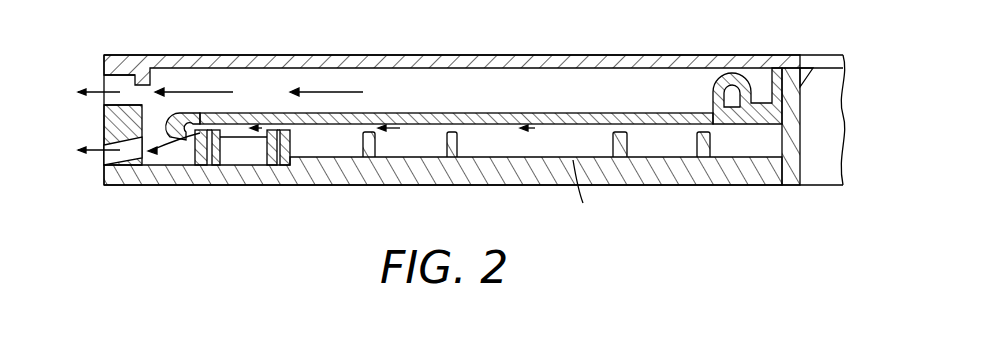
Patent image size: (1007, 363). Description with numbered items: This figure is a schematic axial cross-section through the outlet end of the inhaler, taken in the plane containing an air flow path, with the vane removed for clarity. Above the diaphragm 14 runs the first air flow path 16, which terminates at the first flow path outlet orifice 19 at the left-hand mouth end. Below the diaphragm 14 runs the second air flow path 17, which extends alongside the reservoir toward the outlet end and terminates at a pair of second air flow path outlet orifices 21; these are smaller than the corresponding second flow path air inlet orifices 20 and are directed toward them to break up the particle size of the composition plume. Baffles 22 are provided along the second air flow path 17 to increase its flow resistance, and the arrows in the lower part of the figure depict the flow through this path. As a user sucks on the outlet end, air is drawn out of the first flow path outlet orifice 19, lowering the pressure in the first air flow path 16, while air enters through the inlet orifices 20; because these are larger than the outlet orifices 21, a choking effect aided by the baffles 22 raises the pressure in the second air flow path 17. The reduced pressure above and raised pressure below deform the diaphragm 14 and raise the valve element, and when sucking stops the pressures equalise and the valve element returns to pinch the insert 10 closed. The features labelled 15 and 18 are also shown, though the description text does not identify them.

The insert 10 is at (247, 153).
The diaphragm 14 is at (638, 112).
The seal 15 is at (733, 70).
The first air flow path 16 is at (526, 83).
The second air flow path 17 is at (323, 150).
The top wall 18 is at (349, 55).
The first flow path outlet orifice 19 is at (104, 80).
The second flow path air inlet orifices 20 is at (560, 158).
The second air flow path outlet orifices 21 is at (104, 160).
The baffles 22 is at (443, 137).